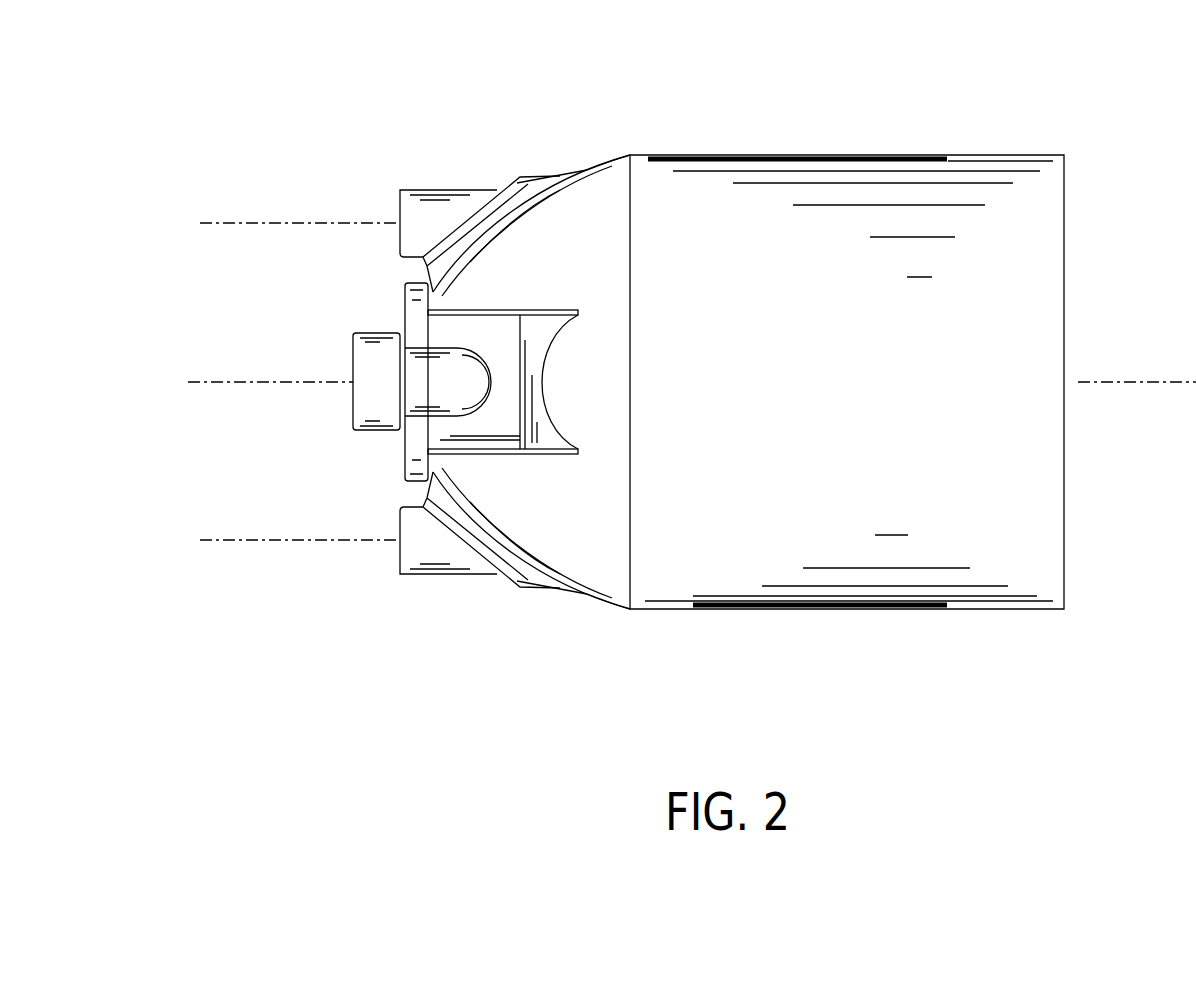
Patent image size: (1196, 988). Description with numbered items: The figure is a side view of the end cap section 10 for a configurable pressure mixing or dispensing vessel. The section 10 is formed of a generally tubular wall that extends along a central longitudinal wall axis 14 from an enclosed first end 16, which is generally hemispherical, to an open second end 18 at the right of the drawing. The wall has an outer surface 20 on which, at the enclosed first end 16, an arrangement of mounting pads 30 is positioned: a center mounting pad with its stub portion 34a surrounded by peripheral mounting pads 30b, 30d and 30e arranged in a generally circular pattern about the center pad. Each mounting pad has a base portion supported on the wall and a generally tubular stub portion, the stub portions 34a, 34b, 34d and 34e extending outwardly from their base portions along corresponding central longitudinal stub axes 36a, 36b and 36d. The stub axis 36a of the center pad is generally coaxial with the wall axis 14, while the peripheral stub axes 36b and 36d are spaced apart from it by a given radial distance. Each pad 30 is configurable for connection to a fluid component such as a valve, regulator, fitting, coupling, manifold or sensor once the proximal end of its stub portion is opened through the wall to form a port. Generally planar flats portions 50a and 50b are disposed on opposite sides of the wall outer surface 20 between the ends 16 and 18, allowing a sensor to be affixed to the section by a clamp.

The end cap section 10 is at (1000, 82).
The central longitudinal wall axis 14 is at (265, 384).
The enclosed first end 16 is at (570, 598).
The open second end 18 is at (1064, 213).
The wall outer surface 20 is at (906, 435).
The mounting pad 30 is at (440, 385).
The peripheral mounting pad 30b is at (533, 175).
The peripheral mounting pad 30d is at (523, 592).
The peripheral mounting pad 30e is at (545, 330).
The tubular stub portion 34a is at (368, 333).
The tubular stub portion 34b is at (450, 190).
The tubular stub portion 34d is at (424, 577).
The tubular stub portion 34e is at (437, 348).
The central longitudinal stub axis 36a is at (235, 380).
The central longitudinal stub axis 36b is at (238, 222).
The central longitudinal stub axis 36d is at (215, 541).
The flats portion 50a is at (740, 155).
The flats portion 50b is at (860, 612).